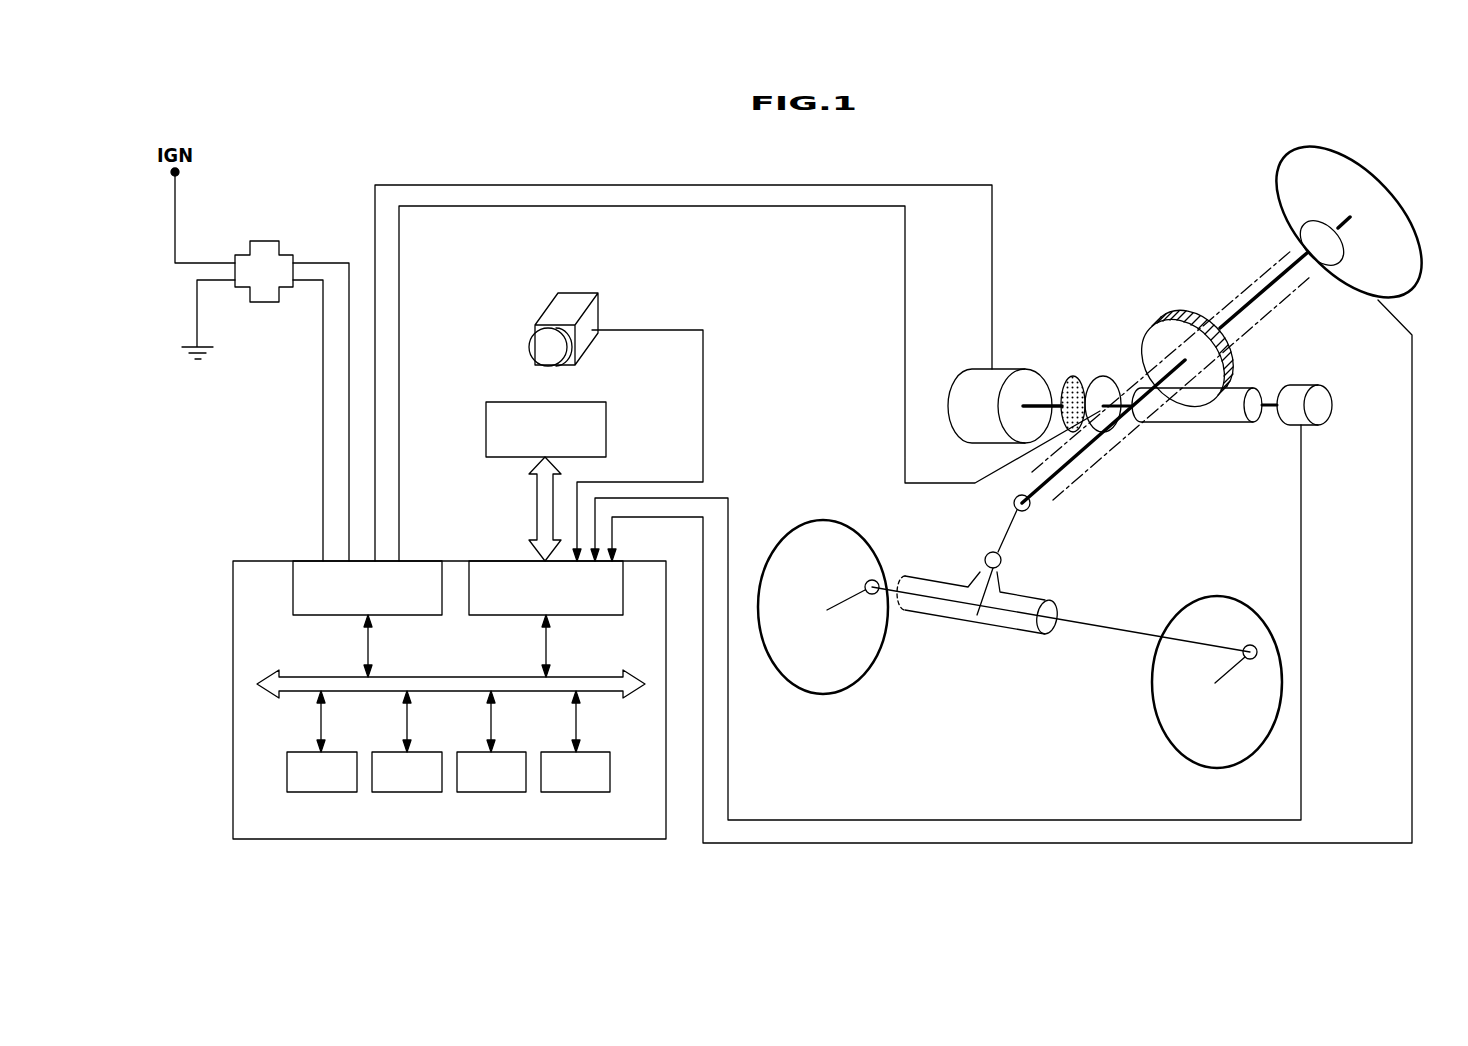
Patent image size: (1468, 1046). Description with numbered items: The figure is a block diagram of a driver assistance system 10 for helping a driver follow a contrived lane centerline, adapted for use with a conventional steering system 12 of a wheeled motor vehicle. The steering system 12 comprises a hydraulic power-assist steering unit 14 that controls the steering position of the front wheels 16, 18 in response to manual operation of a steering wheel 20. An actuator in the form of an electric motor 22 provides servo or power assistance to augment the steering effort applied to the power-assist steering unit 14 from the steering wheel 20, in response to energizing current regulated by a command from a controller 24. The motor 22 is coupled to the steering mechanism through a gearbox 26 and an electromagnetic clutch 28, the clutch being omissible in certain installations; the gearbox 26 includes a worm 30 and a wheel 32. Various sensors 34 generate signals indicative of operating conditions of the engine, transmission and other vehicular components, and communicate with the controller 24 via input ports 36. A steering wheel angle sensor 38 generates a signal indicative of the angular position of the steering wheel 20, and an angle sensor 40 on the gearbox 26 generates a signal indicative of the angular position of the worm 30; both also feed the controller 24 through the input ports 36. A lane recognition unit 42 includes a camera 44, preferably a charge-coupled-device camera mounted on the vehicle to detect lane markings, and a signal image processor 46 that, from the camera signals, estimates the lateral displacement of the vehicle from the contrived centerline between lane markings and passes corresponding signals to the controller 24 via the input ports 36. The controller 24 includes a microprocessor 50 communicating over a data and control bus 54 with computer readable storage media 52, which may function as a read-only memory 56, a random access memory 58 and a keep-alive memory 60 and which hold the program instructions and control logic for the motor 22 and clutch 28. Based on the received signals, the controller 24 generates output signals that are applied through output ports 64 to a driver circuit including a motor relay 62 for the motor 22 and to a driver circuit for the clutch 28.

The driver assistance system 10 is at (487, 180).
The steering system 12 is at (1203, 172).
The hydraulic power-assist steering unit 14 is at (1002, 632).
The front wheel 16 is at (1153, 718).
The front wheel 18 is at (830, 694).
The steering wheel 20 is at (1310, 148).
The electric motor 22 is at (1005, 368).
The controller 24 is at (260, 560).
The gearbox 26 is at (1152, 465).
The electromagnetic clutch 28 is at (1073, 375).
The worm 30 is at (1218, 422).
The wheel 32 is at (1180, 308).
The sensors 34 is at (612, 418).
The input ports 36 is at (502, 617).
The steering wheel angle sensor 38 is at (1333, 267).
The angle sensor 40 is at (1312, 425).
The lane recognition unit 42 is at (522, 282).
The camera 44 is at (540, 353).
The signal image processor 46 is at (578, 292).
The microprocessor 50 is at (337, 752).
The computer readable storage media 52 is at (407, 818).
The data and control bus 54 is at (408, 675).
The read-only memory 56 is at (505, 752).
The random access memory 58 is at (583, 752).
The keep-alive memory 60 is at (423, 752).
The motor relay 62 is at (265, 241).
The output ports 64 is at (335, 617).